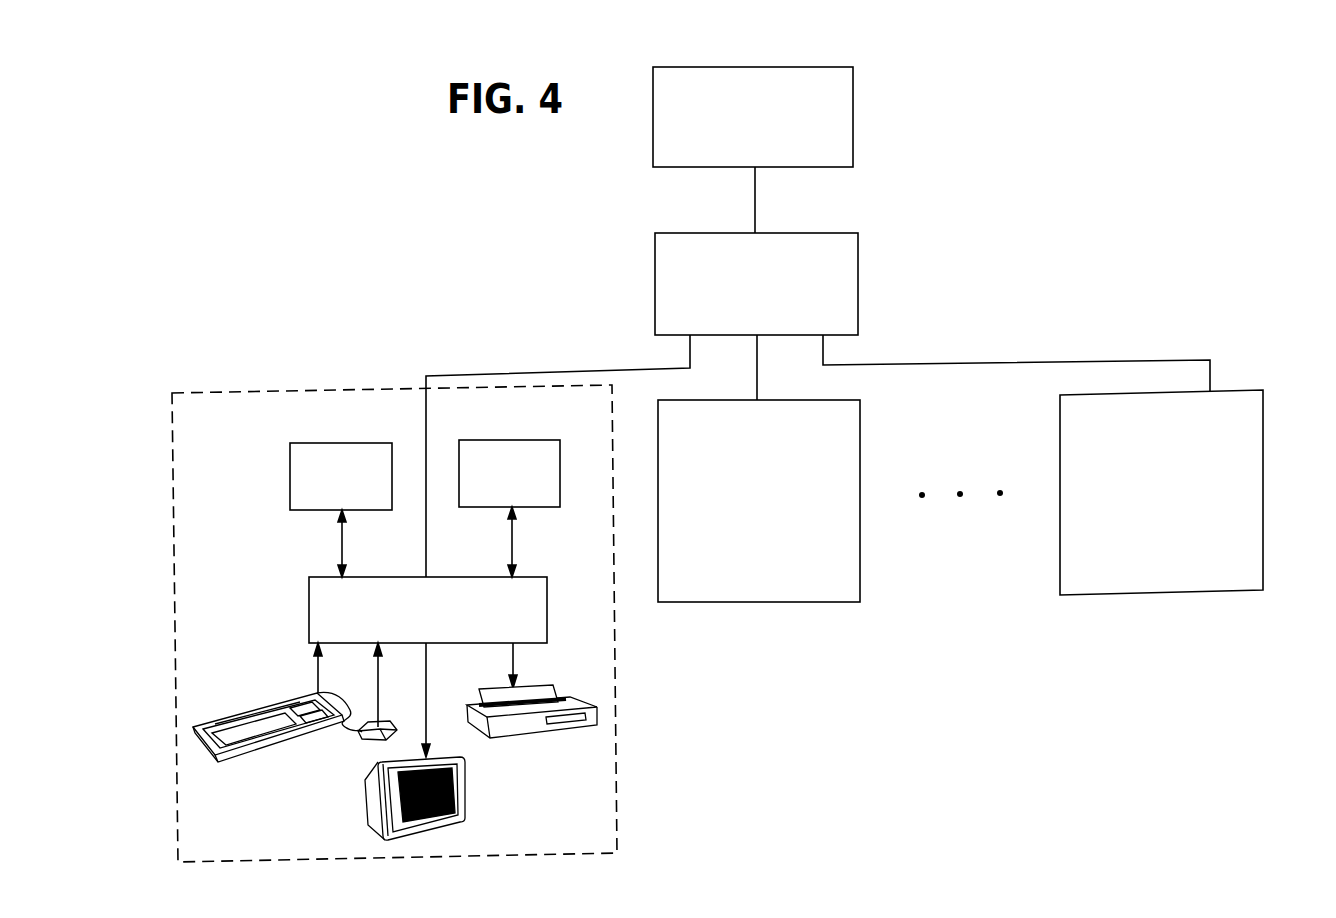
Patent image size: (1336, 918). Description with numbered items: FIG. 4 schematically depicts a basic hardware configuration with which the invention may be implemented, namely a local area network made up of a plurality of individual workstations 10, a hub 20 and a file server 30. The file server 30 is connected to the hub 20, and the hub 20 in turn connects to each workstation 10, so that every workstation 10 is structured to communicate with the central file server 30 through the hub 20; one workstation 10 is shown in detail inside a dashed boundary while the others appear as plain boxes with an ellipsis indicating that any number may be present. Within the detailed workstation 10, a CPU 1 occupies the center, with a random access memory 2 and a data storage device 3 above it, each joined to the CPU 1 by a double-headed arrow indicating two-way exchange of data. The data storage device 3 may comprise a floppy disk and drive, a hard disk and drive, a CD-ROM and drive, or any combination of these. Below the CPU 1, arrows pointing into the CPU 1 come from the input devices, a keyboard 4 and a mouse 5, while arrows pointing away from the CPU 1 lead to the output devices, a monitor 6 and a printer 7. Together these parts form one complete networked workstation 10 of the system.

The CPU 1 is at (538, 604).
The random access memory 2 is at (332, 440).
The data storage device 3 is at (510, 440).
The keyboard 4 is at (262, 747).
The mouse 5 is at (373, 737).
The monitor 6 is at (467, 803).
The printer 7 is at (533, 742).
The workstation 10 is at (843, 447).
The hub 20 is at (840, 282).
The file server 30 is at (837, 115).